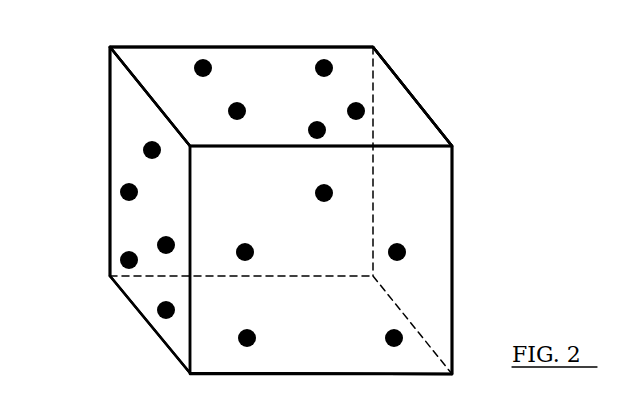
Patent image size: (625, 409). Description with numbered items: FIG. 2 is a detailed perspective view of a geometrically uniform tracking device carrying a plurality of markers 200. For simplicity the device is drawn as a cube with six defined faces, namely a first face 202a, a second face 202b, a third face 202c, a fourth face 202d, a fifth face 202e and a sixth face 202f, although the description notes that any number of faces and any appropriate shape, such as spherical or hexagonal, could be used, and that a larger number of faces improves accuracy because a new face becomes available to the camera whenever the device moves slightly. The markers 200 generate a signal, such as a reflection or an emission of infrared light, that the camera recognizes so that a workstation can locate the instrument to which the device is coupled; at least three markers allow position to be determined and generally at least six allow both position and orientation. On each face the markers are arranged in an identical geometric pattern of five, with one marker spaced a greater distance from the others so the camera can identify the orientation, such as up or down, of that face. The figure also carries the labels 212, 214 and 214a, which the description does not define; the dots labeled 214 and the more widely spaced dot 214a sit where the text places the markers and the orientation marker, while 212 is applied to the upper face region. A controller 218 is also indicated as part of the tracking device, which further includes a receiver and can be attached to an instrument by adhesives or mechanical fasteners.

The marker 200 is at (500, 133).
The first face 202a is at (430, 250).
The second face 202b is at (437, 228).
The third face 202c is at (360, 75).
The fourth face 202d is at (120, 96).
The fifth face 202e is at (118, 279).
The sixth face 202f is at (313, 356).
The housing body 212 is at (270, 70).
The sensors 214 is at (230, 111).
The sensors 214a is at (145, 145).
The controller 218 is at (400, 312).